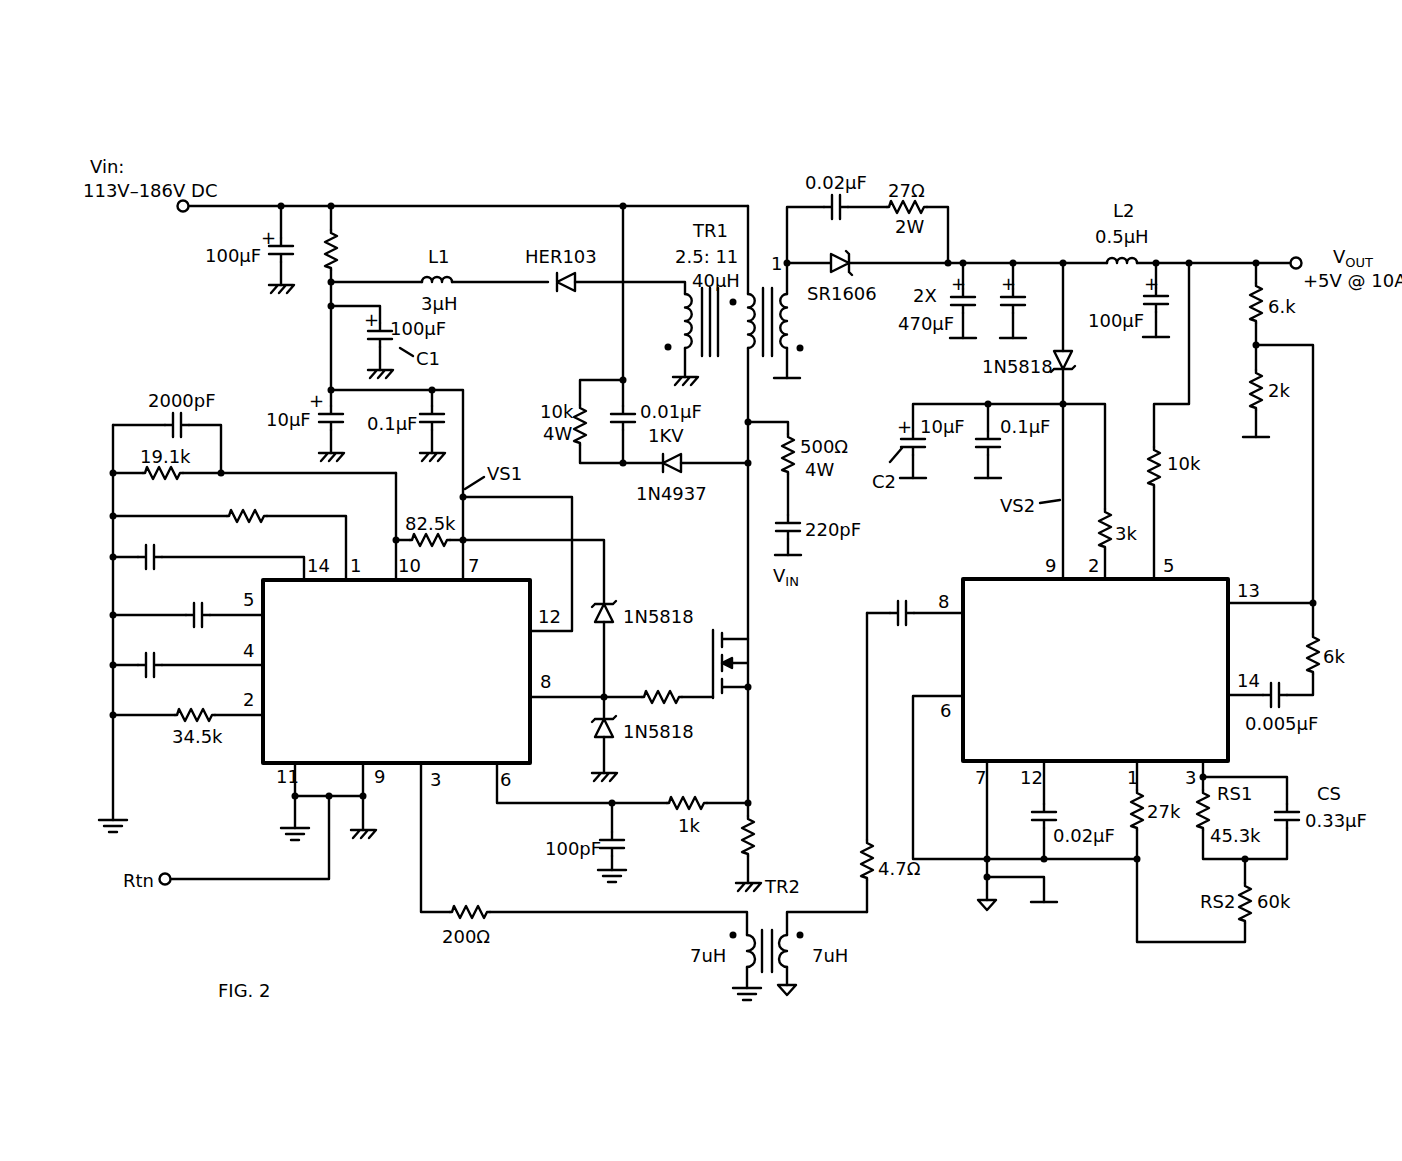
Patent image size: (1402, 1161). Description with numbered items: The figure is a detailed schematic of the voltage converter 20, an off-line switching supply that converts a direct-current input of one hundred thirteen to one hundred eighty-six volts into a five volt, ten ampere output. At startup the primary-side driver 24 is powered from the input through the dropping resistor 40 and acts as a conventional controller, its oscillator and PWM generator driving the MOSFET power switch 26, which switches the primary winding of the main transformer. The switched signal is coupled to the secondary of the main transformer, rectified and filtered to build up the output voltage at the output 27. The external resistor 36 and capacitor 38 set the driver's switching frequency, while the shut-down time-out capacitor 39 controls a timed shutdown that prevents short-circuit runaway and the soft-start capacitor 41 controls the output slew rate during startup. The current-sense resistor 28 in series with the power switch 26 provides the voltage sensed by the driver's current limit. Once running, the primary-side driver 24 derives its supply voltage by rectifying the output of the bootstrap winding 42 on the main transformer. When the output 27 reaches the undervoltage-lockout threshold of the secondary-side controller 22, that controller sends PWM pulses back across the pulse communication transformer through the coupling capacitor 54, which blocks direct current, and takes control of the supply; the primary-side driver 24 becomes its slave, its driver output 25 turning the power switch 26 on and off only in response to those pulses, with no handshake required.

The voltage converter 20 is at (1393, 371).
The secondary-side controller 22 is at (1215, 578).
The primary-side driver 24 is at (458, 767).
The driver output 25 is at (545, 700).
The MOSFET power switch 26 is at (740, 648).
The output 27 is at (1272, 258).
The current-sense resistor 28 is at (752, 827).
The external resistor 36 is at (265, 511).
The capacitor 38 is at (158, 555).
The shut-down time-out capacitor 39 is at (190, 611).
The dropping resistor 40 is at (337, 240).
The soft-start capacitor 41 is at (158, 667).
The bootstrap winding 42 is at (678, 316).
The coupling capacitor 54 is at (900, 595).